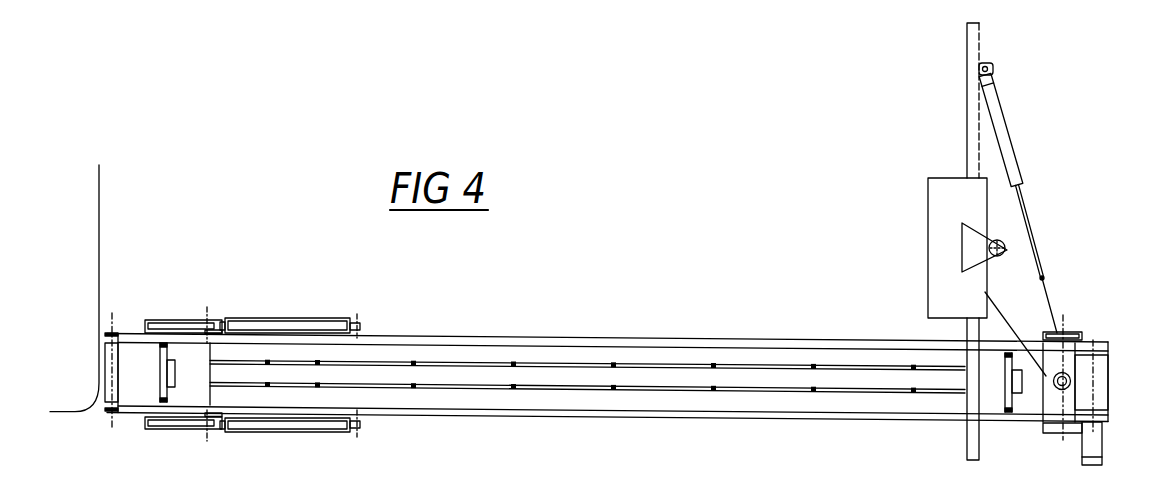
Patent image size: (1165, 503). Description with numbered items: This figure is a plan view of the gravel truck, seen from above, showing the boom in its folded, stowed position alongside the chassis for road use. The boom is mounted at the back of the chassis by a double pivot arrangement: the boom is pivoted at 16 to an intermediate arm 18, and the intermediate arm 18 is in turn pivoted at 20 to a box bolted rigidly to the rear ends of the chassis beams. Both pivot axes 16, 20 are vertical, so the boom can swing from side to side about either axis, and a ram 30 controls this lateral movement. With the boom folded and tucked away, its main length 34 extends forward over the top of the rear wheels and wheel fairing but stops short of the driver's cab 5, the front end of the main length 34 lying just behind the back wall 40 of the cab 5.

The driver's cab 5 is at (78, 235).
The back wall of the cab 40 is at (99, 300).
The main length of the boom 34 is at (490, 400).
The ram 30 is at (1000, 123).
The pivot 20 is at (1002, 243).
The intermediate arm 18 is at (1030, 303).
The pivot 16 is at (1070, 378).